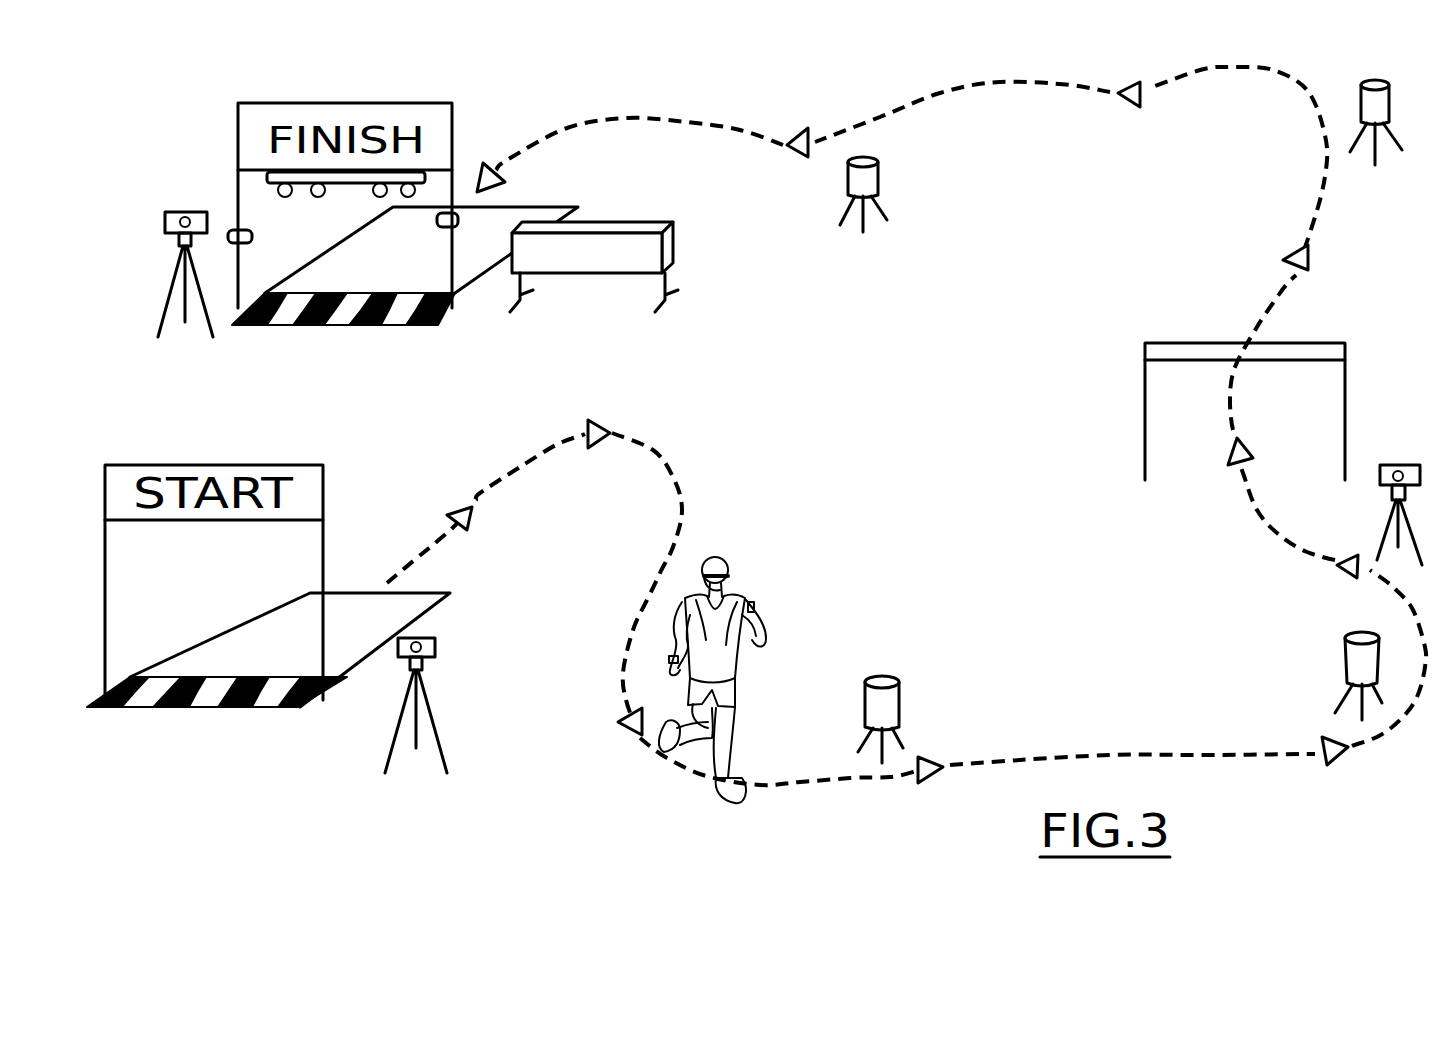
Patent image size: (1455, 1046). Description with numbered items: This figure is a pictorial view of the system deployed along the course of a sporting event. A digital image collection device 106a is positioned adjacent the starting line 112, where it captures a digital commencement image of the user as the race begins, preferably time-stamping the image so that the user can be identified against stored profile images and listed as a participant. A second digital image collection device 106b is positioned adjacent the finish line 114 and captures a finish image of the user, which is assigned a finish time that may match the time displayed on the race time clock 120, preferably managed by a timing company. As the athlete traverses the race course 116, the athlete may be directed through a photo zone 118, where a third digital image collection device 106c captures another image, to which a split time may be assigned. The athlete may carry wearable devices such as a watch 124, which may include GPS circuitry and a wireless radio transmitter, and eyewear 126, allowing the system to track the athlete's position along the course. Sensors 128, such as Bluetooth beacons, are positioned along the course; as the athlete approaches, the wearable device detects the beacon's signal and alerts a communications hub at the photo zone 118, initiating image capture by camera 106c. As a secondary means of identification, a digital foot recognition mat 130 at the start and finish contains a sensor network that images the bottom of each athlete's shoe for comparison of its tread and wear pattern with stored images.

The digital image collection device 106a is at (436, 650).
The digital image collection device 106b is at (208, 226).
The digital image collection device 106c is at (1387, 465).
The starting line 112 is at (203, 707).
The finish line 114 is at (438, 327).
The race course 116 is at (1032, 757).
The photo zone 118 is at (1346, 383).
The race time clock 120 is at (668, 246).
The watch 124 is at (672, 650).
The eyewear 126 is at (730, 573).
The sensor 128 is at (886, 702).
The digital foot recognition mat 130 is at (430, 258).